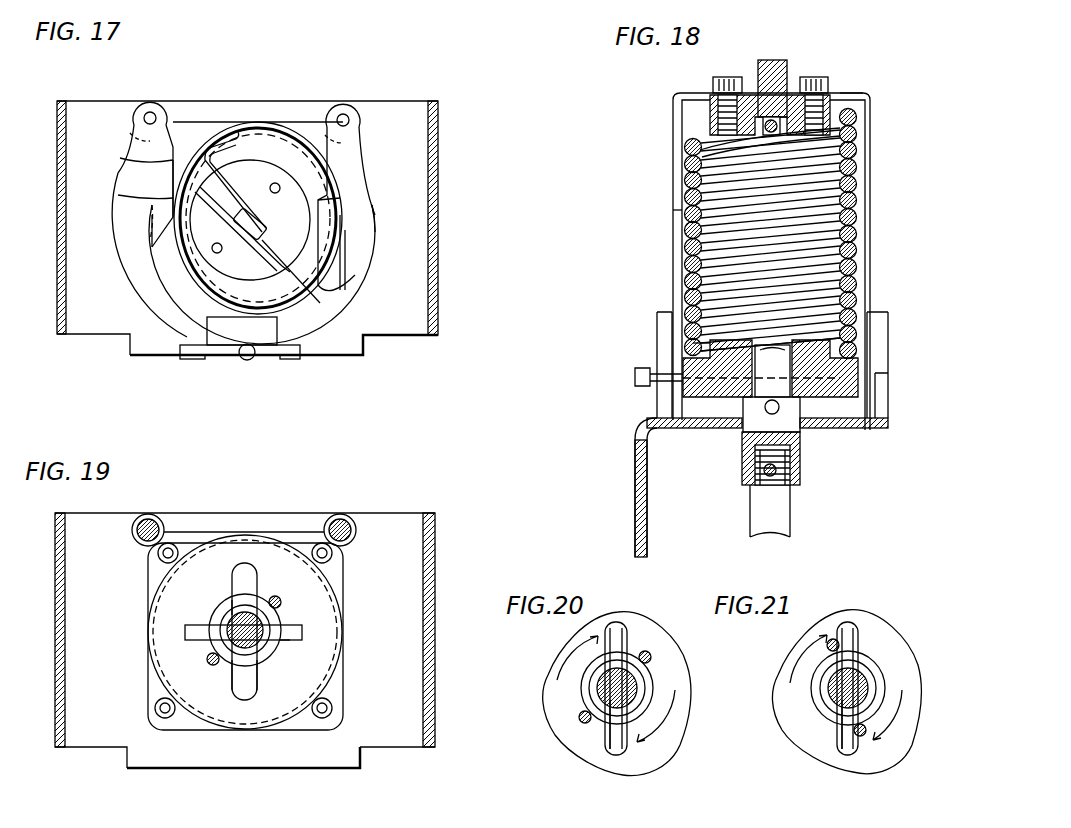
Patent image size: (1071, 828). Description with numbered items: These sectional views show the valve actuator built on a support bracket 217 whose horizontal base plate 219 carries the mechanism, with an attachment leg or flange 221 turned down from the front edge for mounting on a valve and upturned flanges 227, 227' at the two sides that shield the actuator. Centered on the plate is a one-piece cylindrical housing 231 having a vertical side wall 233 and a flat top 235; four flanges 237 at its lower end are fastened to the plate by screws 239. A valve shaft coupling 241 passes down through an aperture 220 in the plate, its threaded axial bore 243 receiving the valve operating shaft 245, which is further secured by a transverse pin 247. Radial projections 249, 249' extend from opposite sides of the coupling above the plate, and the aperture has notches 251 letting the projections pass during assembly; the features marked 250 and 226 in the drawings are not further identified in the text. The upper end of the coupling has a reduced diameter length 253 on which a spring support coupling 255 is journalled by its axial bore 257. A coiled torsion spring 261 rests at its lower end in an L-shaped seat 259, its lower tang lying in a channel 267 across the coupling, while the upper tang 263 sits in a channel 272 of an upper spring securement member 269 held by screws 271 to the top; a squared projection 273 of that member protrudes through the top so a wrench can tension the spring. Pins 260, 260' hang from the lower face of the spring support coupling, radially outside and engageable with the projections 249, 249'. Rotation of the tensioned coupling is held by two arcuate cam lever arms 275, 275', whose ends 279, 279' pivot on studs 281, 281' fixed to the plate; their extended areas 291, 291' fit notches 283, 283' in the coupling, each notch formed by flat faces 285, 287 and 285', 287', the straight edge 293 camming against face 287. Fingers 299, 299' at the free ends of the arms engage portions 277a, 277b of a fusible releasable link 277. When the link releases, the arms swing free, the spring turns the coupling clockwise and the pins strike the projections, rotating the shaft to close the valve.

In FIG. 17, the support bracket 217 is at (440, 330).
In FIG. 17, the horizontal base plate 219 is at (103, 338).
In FIG. 18, the horizontal base plate 219 is at (683, 428).
In FIG. 19, the horizontal base plate 219 is at (412, 513).
In FIG. 18, the aperture 220 is at (805, 432).
In FIG. 19, the aperture 220 is at (228, 600).
In FIG. 20, the aperture 220 is at (650, 678).
In FIG. 17, the attachment leg or flange 221 is at (363, 360).
In FIG. 18, the attachment leg or flange 221 is at (635, 495).
In FIG. 19, the attachment leg or flange 221 is at (260, 768).
In FIG. 21, the cam body 226 is at (830, 715).
In FIG. 17, the upturned flange 227 is at (42, 238).
In FIG. 19, the upturned flange 227 is at (73, 650).
In FIG. 17, the upturned flange 227' is at (474, 218).
In FIG. 19, the upturned flange 227' is at (438, 630).
In FIG. 18, the housing or enclosure 231 is at (673, 105).
In FIG. 17, the side wall 233 is at (277, 122).
In FIG. 18, the side wall 233 is at (673, 210).
In FIG. 19, the side wall 233 is at (340, 680).
In FIG. 18, the flat top 235 is at (845, 93).
In FIG. 19, the flange 237 is at (150, 563).
In FIG. 17, the screw 239 is at (338, 290).
In FIG. 19, the screw 239 is at (180, 545).
In FIG. 18, the valve shaft coupling 241 is at (800, 455).
In FIG. 19, the valve shaft coupling 241 is at (258, 672).
In FIG. 20, the valve shaft coupling 241 is at (640, 705).
In FIG. 18, the axial bore 243 is at (800, 470).
In FIG. 18, the operating shaft 245 is at (752, 527).
In FIG. 18, the pin 247 is at (767, 478).
In FIG. 18, the projection 249 is at (797, 388).
In FIG. 19, the projection 249 is at (231, 616).
In FIG. 20, the projection 249 is at (653, 675).
In FIG. 21, the projection 249 is at (880, 674).
In FIG. 19, the projection 249' is at (308, 655).
In FIG. 20, the projection 249' is at (573, 745).
In FIG. 21, the projection 249' is at (811, 751).
In FIG. 19, the slot end 250 is at (258, 582).
In FIG. 19, the notch 251 is at (232, 672).
In FIG. 18, the reduced diameter length 253 is at (853, 362).
In FIG. 19, the reduced diameter length 253 is at (262, 628).
In FIG. 20, the reduced diameter length 253 is at (600, 685).
In FIG. 21, the reduced diameter length 253 is at (830, 685).
In FIG. 17, the spring support coupling 255 is at (195, 290).
In FIG. 18, the spring support coupling 255 is at (690, 395).
In FIG. 18, the axial bore 257 is at (862, 300).
In FIG. 18, the L-shaped seat 259 is at (693, 343).
In FIG. 19, the pin 260 is at (156, 655).
In FIG. 20, the pin 260 is at (549, 734).
In FIG. 21, the pin 260 is at (787, 654).
In FIG. 19, the pin 260' is at (332, 593).
In FIG. 20, the pin 260' is at (681, 644).
In FIG. 21, the pin 260' is at (895, 744).
In FIG. 17, the coiled torsion spring 261 is at (214, 125).
In FIG. 18, the coiled torsion spring 261 is at (857, 195).
In FIG. 18, the upper tang 263 is at (695, 153).
In FIG. 17, the channel 267 is at (315, 300).
In FIG. 18, the upper spring securement member 269 is at (790, 93).
In FIG. 18, the screw 271 is at (728, 77).
In FIG. 18, the channel 272 is at (823, 143).
In FIG. 18, the projection 273 is at (778, 60).
In FIG. 17, the cam lever arm 275 is at (227, 258).
In FIG. 17, the cam lever arm 275' is at (399, 239).
In FIG. 17, the releasable link 277 is at (242, 360).
In FIG. 18, the releasable link 277 is at (633, 375).
In FIG. 17, the link portion 277a is at (210, 358).
In FIG. 17, the link portion 277b is at (270, 357).
In FIG. 17, the arm end 279 is at (123, 174).
In FIG. 17, the arm end 279' is at (372, 194).
In FIG. 17, the stud 281 is at (119, 104).
In FIG. 18, the stud 281 is at (902, 365).
In FIG. 19, the stud 281 is at (156, 506).
In FIG. 17, the stud 281' is at (387, 106).
In FIG. 19, the stud 281' is at (288, 501).
In FIG. 17, the notch 283 is at (123, 199).
In FIG. 17, the notch 283' is at (383, 245).
In FIG. 17, the face 285 is at (123, 166).
In FIG. 17, the face 285' is at (385, 259).
In FIG. 17, the face 287 is at (113, 226).
In FIG. 17, the face 287' is at (372, 187).
In FIG. 17, the extended area 291 is at (172, 139).
In FIG. 17, the extended area 291' is at (372, 282).
In FIG. 17, the straight edge 293 is at (150, 250).
In FIG. 17, the finger 299 is at (170, 379).
In FIG. 17, the finger 299' is at (318, 380).